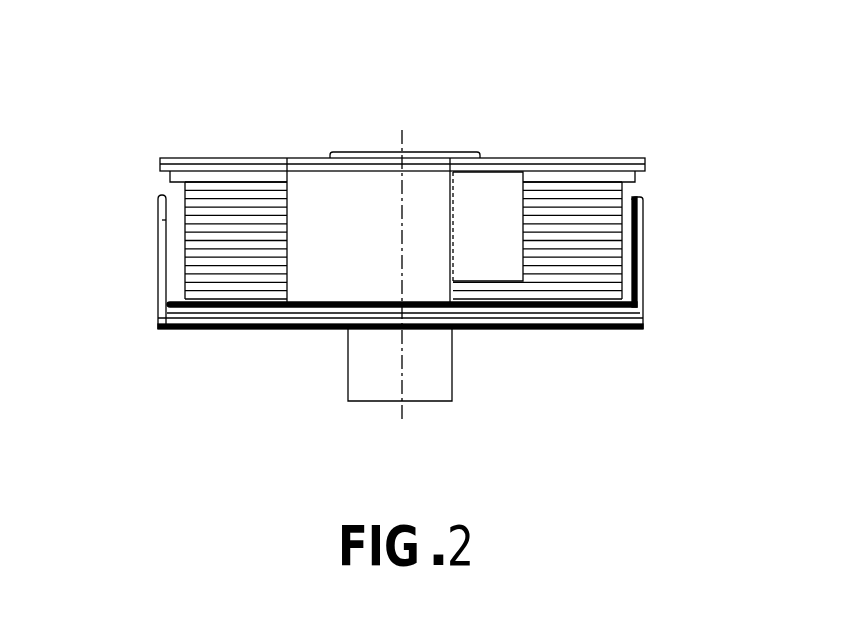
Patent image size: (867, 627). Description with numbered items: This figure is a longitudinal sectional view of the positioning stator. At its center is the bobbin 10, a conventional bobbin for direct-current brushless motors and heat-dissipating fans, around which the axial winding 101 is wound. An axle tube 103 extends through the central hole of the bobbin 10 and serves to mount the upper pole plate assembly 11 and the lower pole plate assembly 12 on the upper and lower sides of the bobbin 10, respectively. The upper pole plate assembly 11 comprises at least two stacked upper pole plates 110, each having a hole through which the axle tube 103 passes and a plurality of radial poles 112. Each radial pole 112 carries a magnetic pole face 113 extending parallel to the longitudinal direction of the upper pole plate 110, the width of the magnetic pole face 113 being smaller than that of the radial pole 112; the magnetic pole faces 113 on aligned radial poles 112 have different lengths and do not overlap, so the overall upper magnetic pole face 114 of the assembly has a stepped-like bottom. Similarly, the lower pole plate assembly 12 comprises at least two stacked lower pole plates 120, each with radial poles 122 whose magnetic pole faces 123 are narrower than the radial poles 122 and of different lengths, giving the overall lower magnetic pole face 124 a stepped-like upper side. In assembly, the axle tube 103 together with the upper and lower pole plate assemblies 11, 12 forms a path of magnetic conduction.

The bobbin 10 is at (585, 307).
The upper pole plate assembly 11 is at (238, 145).
The lower pole plate assembly 12 is at (480, 348).
The axial winding 101 is at (585, 235).
The axle tube 103 is at (430, 382).
The upper pole plate 110 is at (568, 158).
The radial pole 112 is at (313, 158).
The magnetic pole face 113 is at (323, 205).
The overall upper magnetic pole face 114 is at (372, 178).
The lower pole plate 120 is at (555, 328).
The radial pole 122 is at (158, 326).
The magnetic pole face 123 is at (160, 238).
The overall lower magnetic pole face 124 is at (140, 211).